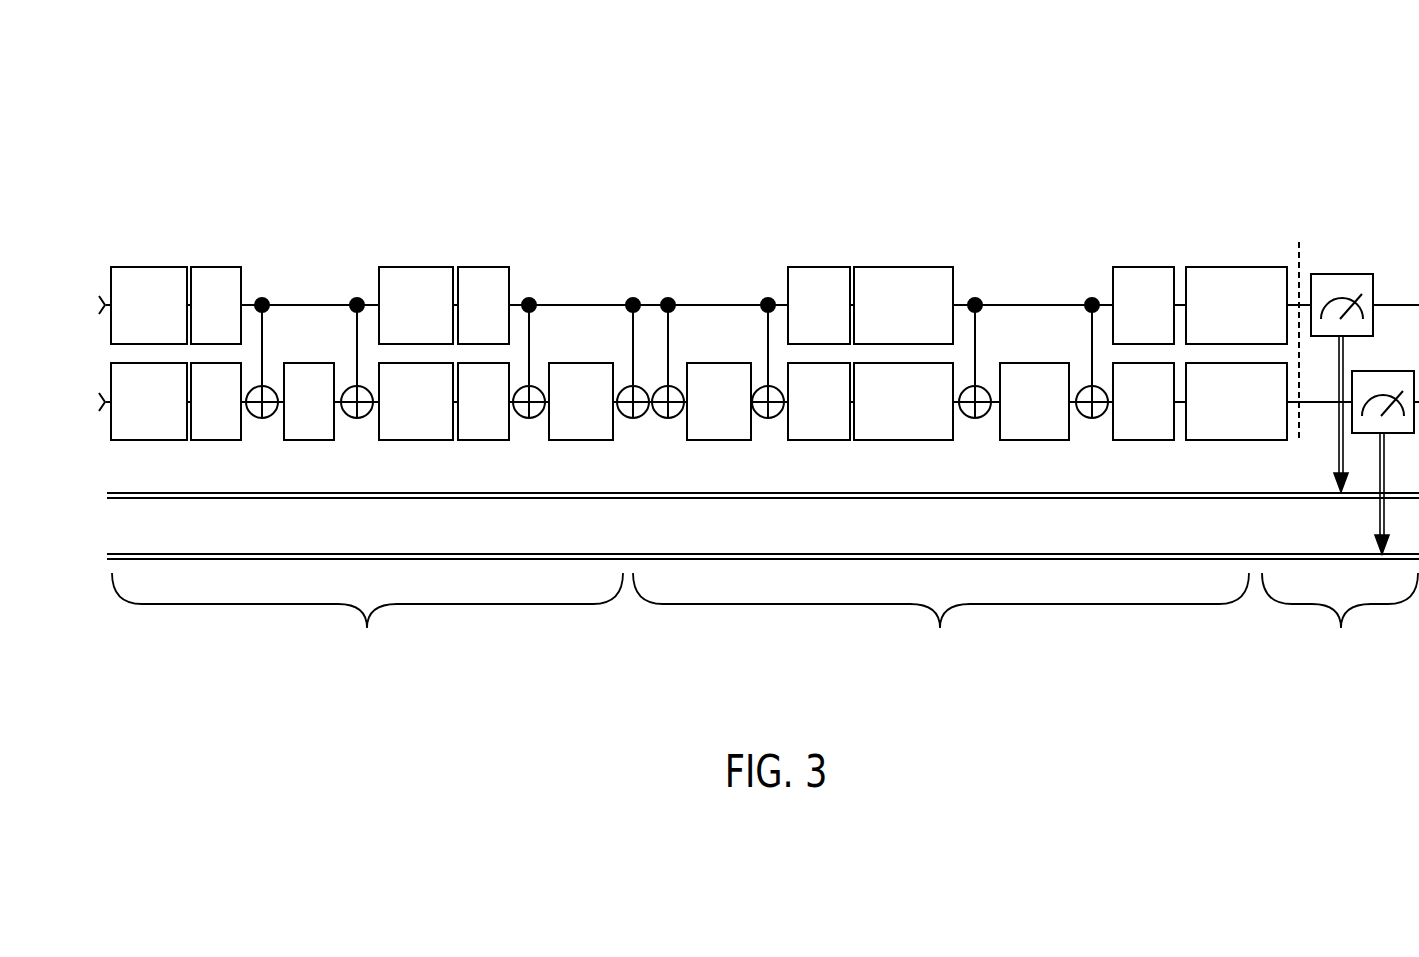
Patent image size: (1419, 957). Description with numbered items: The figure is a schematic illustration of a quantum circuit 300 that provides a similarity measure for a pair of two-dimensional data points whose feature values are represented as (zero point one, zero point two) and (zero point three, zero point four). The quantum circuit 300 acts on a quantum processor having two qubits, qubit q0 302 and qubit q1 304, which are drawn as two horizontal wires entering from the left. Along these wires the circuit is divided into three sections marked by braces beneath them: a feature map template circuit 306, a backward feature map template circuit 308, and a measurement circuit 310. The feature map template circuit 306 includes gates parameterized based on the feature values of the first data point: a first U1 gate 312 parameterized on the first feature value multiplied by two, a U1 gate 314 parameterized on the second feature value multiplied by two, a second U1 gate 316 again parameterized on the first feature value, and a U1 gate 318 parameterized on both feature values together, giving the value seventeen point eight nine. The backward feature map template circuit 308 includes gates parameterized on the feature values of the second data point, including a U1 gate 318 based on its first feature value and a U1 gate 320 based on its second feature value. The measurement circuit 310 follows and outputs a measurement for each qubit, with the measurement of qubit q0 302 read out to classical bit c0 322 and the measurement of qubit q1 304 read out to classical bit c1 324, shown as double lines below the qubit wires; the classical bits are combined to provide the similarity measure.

The quantum circuit 300 is at (202, 100).
The qubit q0 302 is at (53, 290).
The qubit q1 304 is at (60, 387).
The feature map template circuit 306 is at (367, 620).
The backward feature map template circuit 308 is at (941, 620).
The measurement circuit 310 is at (1340, 620).
The U1 gate 312 is at (203, 267).
The U1 gate 314 is at (217, 440).
The U1 gate 316 is at (509, 283).
The U1 gate 318 is at (837, 267).
The U1 gate 320 is at (822, 440).
The classical bit c0 322 is at (60, 483).
The classical bit c1 324 is at (58, 577).